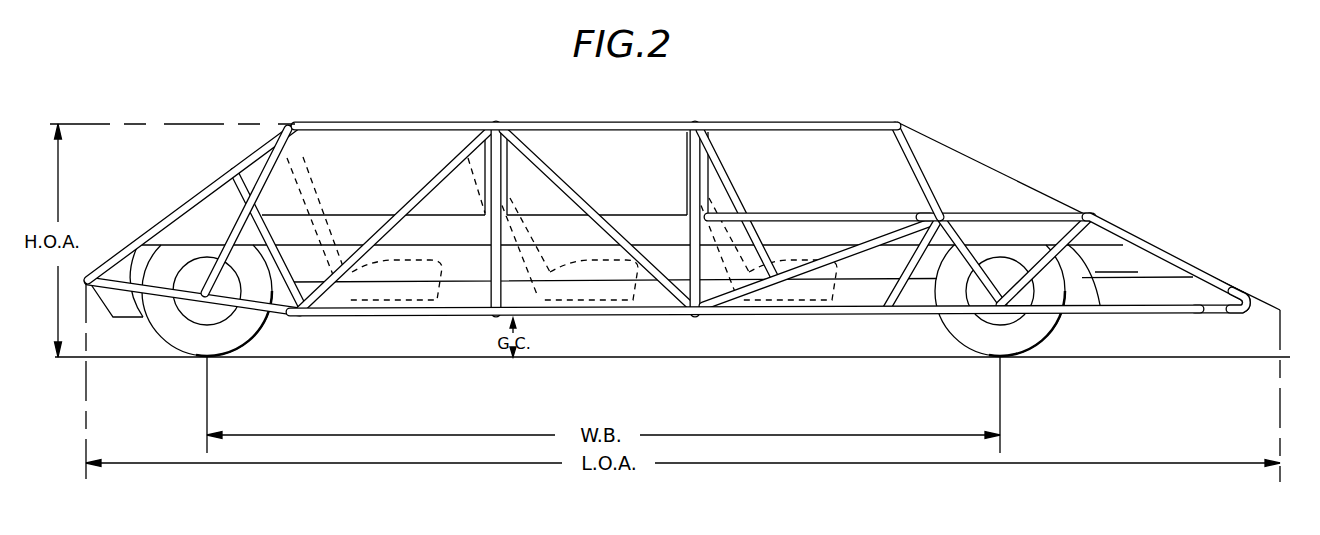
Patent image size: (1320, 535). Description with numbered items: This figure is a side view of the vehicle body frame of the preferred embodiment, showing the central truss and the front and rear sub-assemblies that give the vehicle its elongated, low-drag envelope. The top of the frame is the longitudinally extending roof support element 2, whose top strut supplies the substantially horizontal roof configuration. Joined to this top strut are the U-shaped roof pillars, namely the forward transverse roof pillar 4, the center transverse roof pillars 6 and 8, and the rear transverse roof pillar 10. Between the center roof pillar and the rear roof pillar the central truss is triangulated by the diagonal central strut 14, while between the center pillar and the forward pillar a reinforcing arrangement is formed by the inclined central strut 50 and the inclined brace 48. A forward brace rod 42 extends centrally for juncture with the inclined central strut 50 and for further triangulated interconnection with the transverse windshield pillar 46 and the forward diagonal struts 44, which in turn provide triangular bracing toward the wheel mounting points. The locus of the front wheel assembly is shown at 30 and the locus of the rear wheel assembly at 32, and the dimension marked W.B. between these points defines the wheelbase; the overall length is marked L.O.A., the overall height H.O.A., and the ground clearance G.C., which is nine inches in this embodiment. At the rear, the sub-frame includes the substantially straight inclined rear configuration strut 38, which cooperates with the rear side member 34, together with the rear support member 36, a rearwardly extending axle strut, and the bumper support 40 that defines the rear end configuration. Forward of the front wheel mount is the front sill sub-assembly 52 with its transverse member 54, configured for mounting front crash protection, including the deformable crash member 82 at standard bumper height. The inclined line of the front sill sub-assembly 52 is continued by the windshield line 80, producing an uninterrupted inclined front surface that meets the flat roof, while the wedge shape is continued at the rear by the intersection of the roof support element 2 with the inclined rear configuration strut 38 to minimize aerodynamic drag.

The roof support element 2 is at (591, 121).
The forward transverse roof pillar 4 is at (907, 166).
The center transverse roof pillar 6 is at (690, 156).
The center transverse roof pillar 8 is at (503, 183).
The rear transverse roof pillar 10 is at (290, 124).
The diagonal central strut 14 is at (417, 190).
The front wheel assembly mounting locus 30 is at (1004, 300).
The rear wheel assembly locus 32 is at (248, 332).
The rear side member 34 is at (236, 242).
The rear support member 36 is at (133, 317).
The rear configuration strut 38 is at (195, 186).
The bumper support 40 is at (92, 278).
The forward brace rod 42 is at (810, 212).
The forward diagonal struts 44 is at (1040, 212).
The transverse windshield pillar 46 is at (947, 207).
The inclined brace 48 is at (843, 250).
The inclined central strut 50 is at (710, 158).
The front sill sub-assembly 52 is at (1135, 232).
The transverse member 54 is at (1247, 298).
The windshield line 80 is at (1010, 176).
The deformable crash member 82 is at (1116, 261).